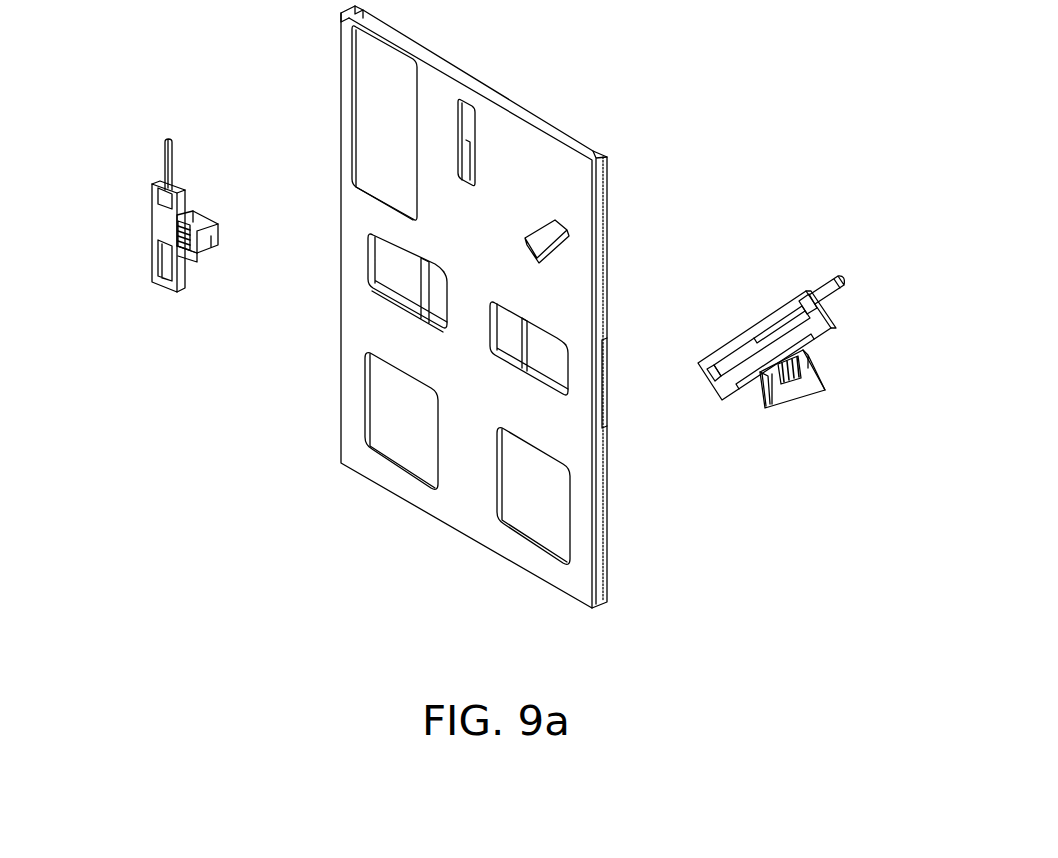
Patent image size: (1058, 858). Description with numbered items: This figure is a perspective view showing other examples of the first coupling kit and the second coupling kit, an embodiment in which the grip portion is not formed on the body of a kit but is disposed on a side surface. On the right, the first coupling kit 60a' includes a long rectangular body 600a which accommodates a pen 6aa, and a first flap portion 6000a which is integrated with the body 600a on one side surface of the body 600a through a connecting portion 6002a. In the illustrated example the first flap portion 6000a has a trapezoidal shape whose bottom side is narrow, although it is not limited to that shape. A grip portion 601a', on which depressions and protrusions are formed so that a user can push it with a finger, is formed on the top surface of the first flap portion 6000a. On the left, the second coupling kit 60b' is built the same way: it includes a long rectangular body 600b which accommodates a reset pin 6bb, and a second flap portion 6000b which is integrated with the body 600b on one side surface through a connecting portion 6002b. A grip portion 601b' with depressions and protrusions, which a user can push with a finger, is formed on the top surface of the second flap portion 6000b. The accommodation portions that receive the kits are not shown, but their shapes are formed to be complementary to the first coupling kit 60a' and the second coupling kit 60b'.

The second coupling kit 60b' is at (166, 213).
The reset pin 6bb is at (172, 160).
The second flap portion 6000b is at (227, 192).
The body 600b is at (163, 223).
The grip portion 601b' is at (234, 264).
The connecting portion 6002b is at (187, 260).
The first coupling kit 60a' is at (802, 324).
The body 600a is at (733, 348).
The pen 6aa is at (842, 287).
The grip portion 601a' is at (855, 357).
The first flap portion 6000a is at (800, 393).
The connecting portion 6002a is at (753, 383).